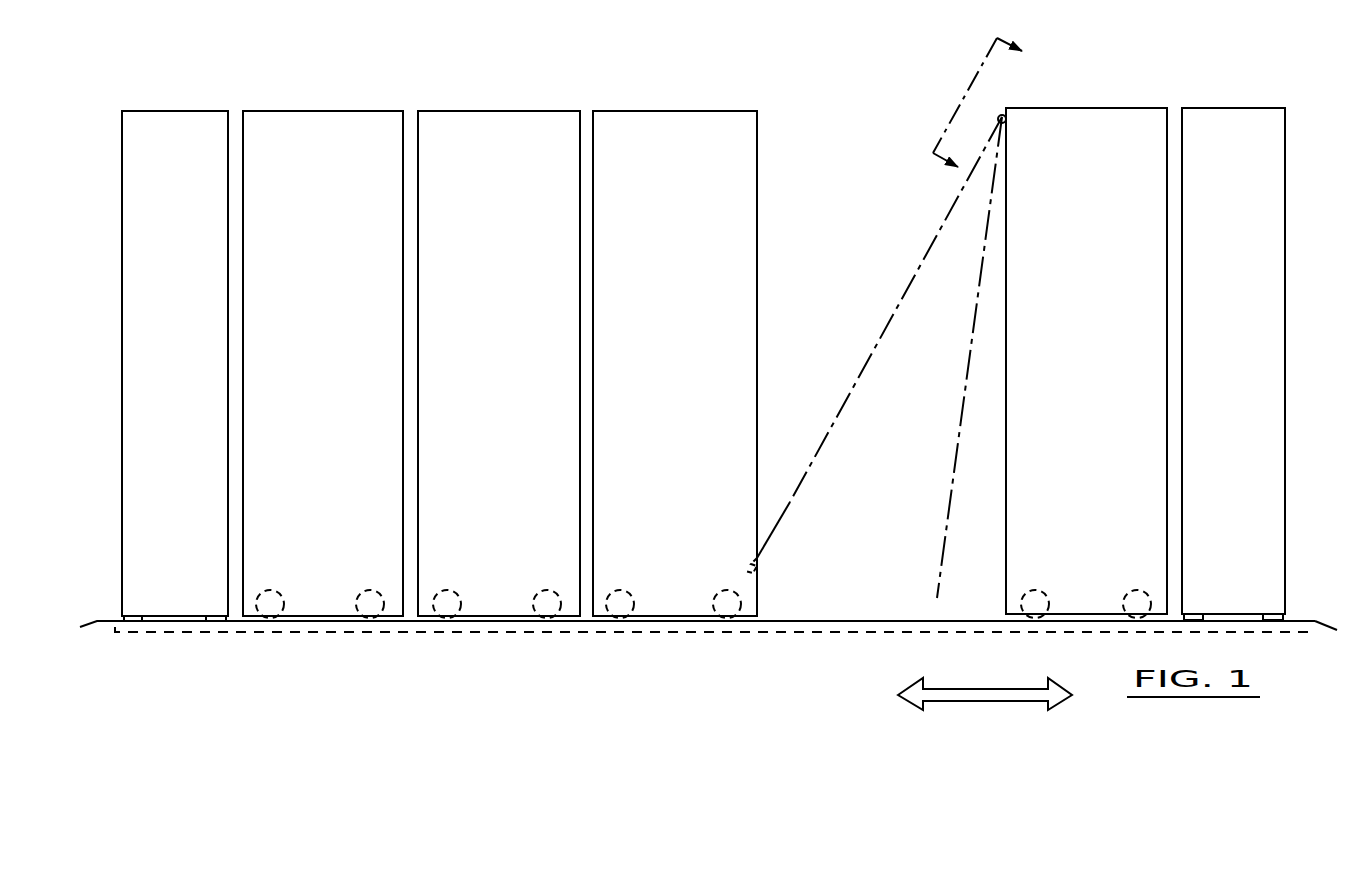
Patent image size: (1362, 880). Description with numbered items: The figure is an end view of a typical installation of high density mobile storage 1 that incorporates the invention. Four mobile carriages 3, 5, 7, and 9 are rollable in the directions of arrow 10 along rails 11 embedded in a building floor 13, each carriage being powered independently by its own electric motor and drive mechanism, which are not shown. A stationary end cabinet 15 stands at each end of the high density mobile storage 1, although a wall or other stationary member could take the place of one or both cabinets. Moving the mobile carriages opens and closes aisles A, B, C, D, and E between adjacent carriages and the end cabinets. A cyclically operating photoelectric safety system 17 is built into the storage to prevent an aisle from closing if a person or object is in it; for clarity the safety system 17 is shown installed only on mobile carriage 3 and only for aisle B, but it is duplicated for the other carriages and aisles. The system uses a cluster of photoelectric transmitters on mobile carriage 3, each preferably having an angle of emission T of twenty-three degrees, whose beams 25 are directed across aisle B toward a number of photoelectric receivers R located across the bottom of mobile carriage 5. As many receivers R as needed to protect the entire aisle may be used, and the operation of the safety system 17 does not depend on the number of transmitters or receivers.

The high density mobile storage 1 is at (665, 660).
The mobile carriage 3 is at (1088, 48).
The mobile carriage 5 is at (673, 108).
The mobile carriage 7 is at (490, 108).
The mobile carriage 9 is at (313, 108).
The arrow 10 is at (1000, 702).
The rails 11 is at (820, 620).
The building floor 13 is at (1298, 618).
The stationary end cabinet 15 is at (166, 108).
The photoelectric safety system 17 is at (926, 167).
The beams 25 is at (838, 400).
The aisle A is at (1177, 118).
The aisle B is at (848, 281).
The aisle C is at (585, 120).
The aisle D is at (410, 117).
The aisle E is at (235, 132).
The photoelectric receivers R is at (745, 573).
The angle of emission T is at (975, 267).